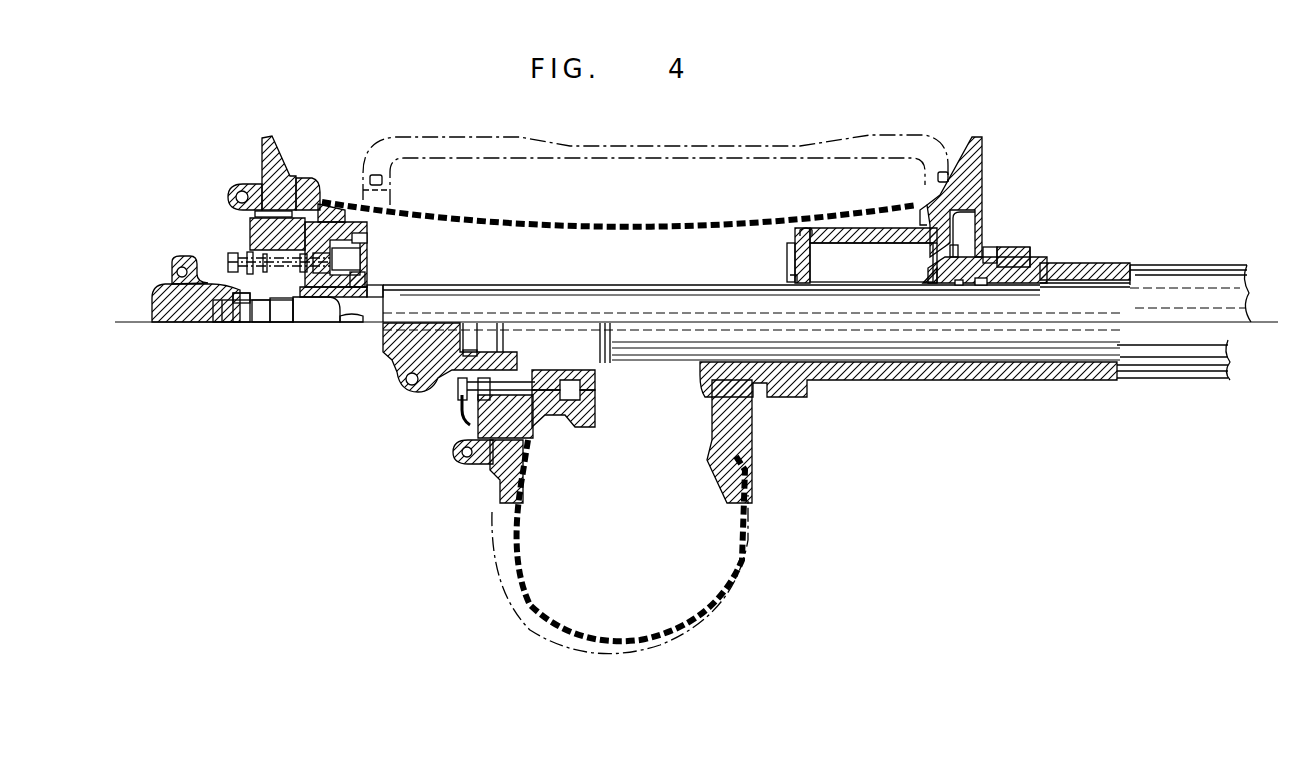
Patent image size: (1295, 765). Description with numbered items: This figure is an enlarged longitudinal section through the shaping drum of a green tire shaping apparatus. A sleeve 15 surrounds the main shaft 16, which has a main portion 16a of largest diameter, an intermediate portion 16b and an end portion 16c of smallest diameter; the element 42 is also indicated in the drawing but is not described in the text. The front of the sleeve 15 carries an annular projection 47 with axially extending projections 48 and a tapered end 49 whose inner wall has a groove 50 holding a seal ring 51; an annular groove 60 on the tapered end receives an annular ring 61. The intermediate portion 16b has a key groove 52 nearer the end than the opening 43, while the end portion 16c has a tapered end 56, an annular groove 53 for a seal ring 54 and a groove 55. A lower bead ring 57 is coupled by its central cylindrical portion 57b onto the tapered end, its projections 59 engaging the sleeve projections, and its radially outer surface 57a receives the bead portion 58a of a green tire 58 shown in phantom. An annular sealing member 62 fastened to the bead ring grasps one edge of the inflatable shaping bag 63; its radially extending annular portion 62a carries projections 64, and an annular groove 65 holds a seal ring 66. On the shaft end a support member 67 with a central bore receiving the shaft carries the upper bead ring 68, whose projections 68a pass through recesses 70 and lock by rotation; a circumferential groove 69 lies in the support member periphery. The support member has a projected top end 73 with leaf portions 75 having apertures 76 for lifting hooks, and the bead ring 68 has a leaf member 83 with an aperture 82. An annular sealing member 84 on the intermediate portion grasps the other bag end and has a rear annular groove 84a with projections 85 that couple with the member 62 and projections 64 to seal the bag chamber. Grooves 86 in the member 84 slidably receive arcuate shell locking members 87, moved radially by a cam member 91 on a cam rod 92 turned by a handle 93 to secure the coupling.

The sleeve 15 is at (1118, 265).
The main shaft 16 is at (596, 283).
The main portion 16a is at (520, 285).
The intermediate portion 16b is at (375, 290).
The end portion 16c is at (258, 322).
The inner rod 42 is at (1053, 318).
The opening 43 is at (362, 322).
The annular projection 47 is at (1005, 249).
The axially extending projections 48 is at (990, 247).
The tapered end 49 is at (925, 276).
The circumferentially extending groove 50 is at (978, 285).
The seal ring 51 is at (955, 284).
The key groove 52 is at (333, 322).
The annular groove 53 is at (282, 322).
The seal ring 54 is at (283, 320).
The groove 55 is at (240, 322).
The tapered end 56 is at (222, 322).
The lower bead ring 57 is at (984, 140).
The radially outer surface 57a is at (925, 200).
The central cylindrical portion 57b is at (960, 250).
The green tire 58 is at (515, 138).
The bead portion 58a is at (945, 172).
The projections 59 is at (1032, 255).
The annular groove 60 is at (1000, 284).
The annular ring 61 is at (958, 250).
The annular sealing member 62 is at (792, 239).
The radially extending annular portion 62a is at (789, 272).
The inflatable shaping bag 63 is at (590, 225).
The projections 64 is at (786, 255).
The annular groove 65 is at (814, 230).
The seal ring 66 is at (818, 240).
The support member 67 is at (246, 247).
The upper bead ring 68 is at (262, 152).
The projections 68a is at (302, 180).
The circumferentially extending groove 69 is at (252, 238).
The recesses 70 is at (258, 216).
The projected top end 73 is at (152, 300).
The leaf portion 75 is at (395, 375).
The aperture 76 is at (412, 385).
The aperture 82 is at (232, 195).
The leaf member 83 is at (248, 190).
The annular sealing member 84 is at (348, 205).
The annular groove 84a is at (368, 236).
The projections 85 is at (368, 258).
The grooves 86 is at (333, 292).
The arcuate shell locking member 87 is at (597, 380).
The cam member 91 is at (573, 425).
The cam rod 92 is at (505, 416).
The handle 93 is at (466, 412).